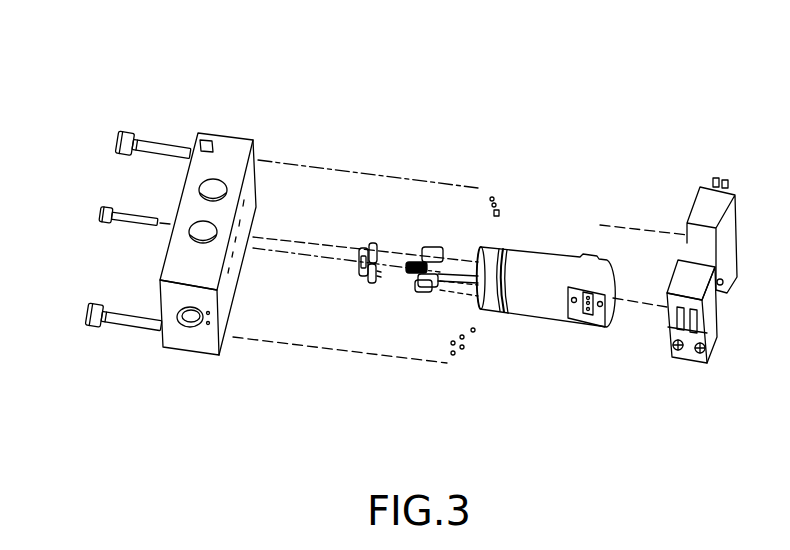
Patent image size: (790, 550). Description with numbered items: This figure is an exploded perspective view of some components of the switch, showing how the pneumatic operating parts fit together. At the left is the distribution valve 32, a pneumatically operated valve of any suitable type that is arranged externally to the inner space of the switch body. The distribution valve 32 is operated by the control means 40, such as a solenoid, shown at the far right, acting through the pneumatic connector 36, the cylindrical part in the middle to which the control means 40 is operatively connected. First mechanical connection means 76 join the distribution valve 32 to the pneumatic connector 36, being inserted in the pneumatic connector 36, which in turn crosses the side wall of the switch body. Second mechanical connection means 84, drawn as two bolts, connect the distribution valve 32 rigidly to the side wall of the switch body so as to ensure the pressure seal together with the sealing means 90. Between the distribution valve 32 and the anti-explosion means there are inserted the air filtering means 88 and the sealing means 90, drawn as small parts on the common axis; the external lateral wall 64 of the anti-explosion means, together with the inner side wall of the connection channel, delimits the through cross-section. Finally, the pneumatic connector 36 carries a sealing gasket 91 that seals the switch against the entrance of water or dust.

The distribution valve 32 is at (182, 345).
The pneumatic connector 36 is at (518, 305).
The control means 40 is at (715, 257).
The external lateral wall 64 is at (412, 248).
The first mechanical connection means 76 is at (99, 210).
The second mechanical connection means 84 is at (143, 137).
The air filtering means 88 is at (377, 234).
The sealing means 90 is at (364, 236).
The sealing gasket 91 is at (510, 247).